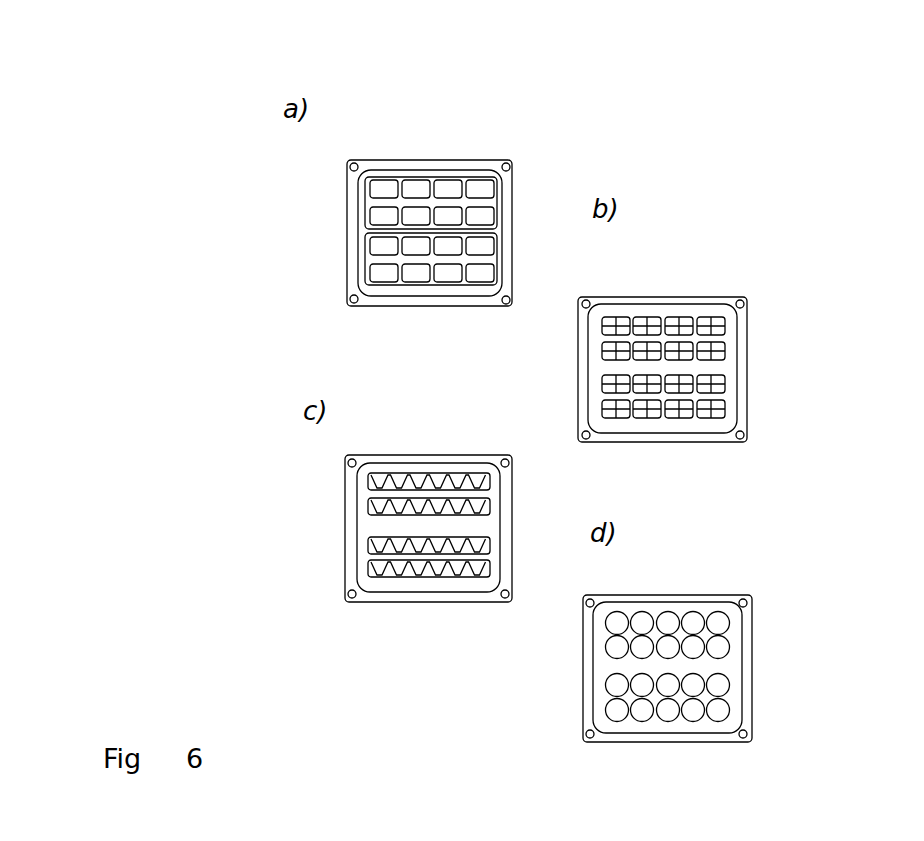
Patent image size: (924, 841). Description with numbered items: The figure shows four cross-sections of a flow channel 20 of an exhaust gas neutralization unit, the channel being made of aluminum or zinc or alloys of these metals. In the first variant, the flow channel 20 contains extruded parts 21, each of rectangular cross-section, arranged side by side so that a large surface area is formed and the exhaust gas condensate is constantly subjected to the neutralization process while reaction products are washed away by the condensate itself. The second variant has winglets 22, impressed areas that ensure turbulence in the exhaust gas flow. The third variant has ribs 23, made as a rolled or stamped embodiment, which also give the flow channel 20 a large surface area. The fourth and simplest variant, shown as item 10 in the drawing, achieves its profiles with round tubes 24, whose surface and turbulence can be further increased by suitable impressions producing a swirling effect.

The housing with circular openings 10 is at (705, 666).
The flow channel 20 is at (405, 170).
The extruded parts 21 is at (472, 215).
The winglets 22 is at (717, 411).
The ribs 23 is at (441, 508).
The round tubes 24 is at (693, 648).